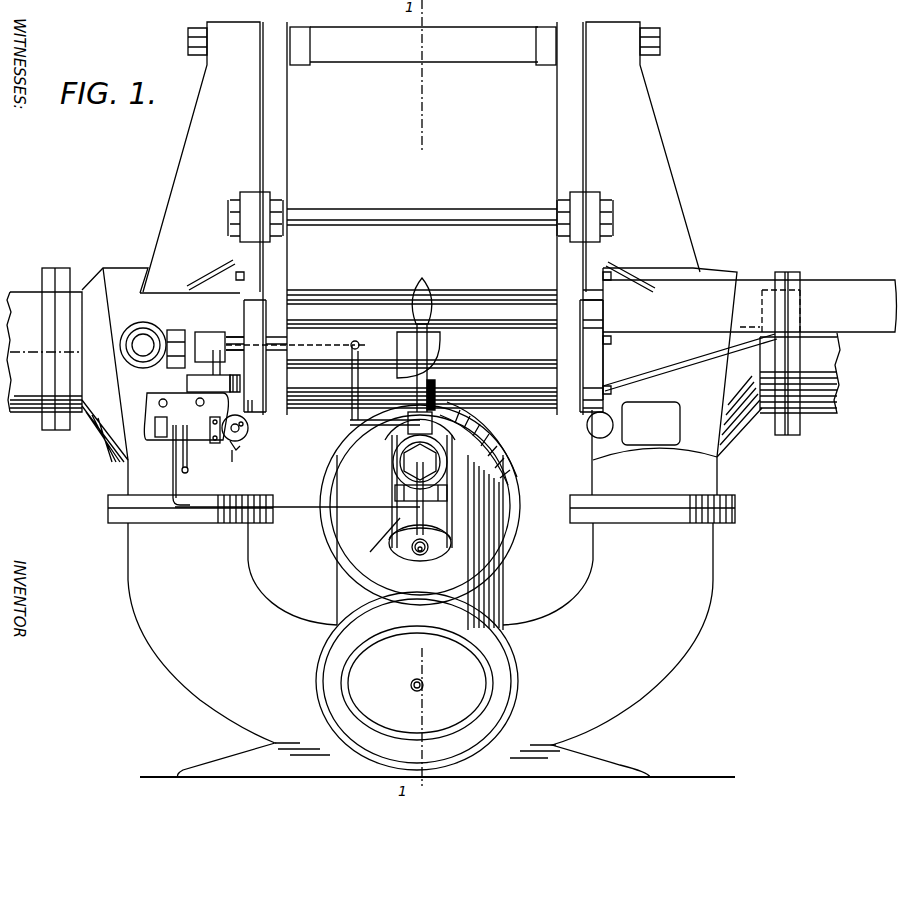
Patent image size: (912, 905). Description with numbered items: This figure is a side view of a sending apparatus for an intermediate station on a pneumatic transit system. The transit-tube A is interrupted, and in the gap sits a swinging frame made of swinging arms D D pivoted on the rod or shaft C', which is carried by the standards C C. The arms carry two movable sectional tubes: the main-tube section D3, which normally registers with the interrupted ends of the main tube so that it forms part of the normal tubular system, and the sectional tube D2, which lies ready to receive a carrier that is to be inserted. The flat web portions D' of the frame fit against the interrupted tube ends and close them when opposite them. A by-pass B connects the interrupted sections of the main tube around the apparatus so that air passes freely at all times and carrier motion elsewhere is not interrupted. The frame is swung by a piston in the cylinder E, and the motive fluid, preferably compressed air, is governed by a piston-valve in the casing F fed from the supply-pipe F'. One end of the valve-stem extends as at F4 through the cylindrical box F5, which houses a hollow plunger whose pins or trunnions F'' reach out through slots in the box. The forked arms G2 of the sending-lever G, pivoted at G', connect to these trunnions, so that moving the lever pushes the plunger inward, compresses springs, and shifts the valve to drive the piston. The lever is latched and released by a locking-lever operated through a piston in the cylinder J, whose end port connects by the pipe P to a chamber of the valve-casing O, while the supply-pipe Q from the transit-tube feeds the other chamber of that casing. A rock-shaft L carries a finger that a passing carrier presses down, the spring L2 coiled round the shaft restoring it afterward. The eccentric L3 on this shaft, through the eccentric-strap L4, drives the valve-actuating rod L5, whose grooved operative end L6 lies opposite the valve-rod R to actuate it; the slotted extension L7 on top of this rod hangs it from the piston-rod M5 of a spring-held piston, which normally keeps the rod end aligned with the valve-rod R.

The transit-tube A is at (452, 351).
The by-pass B is at (429, 522).
The standards C is at (421, 157).
The rod or shaft C' is at (423, 46).
The swinging arms D is at (421, 218).
The web portions of swinging frame D' is at (420, 302).
The sectional tube D2 is at (422, 235).
The main-tube section D3 is at (371, 349).
The cylinder E is at (417, 612).
The valve casing F is at (445, 420).
The supply-pipe F' is at (323, 379).
The pins or trunnions F'' is at (325, 431).
The valve-stem extension F4 is at (420, 554).
The cylindrical box F5 is at (378, 547).
The sending-lever G is at (426, 345).
The pivot of sending-lever G' is at (468, 462).
The forked arms G2 is at (457, 512).
The cylinder J is at (478, 443).
The rock-shaft L is at (262, 405).
The spring L2 is at (224, 438).
The eccentric L3 is at (250, 430).
The eccentric-strap L4 is at (245, 445).
The valve-actuating rod L5 is at (232, 452).
The operative end of valve-actuating rod L6 is at (187, 461).
The slotted extension L7 is at (203, 440).
The piston-rod M5 is at (194, 373).
The valve-casing O is at (156, 425).
The pipe P is at (175, 455).
The supply-pipe Q is at (173, 470).
The valve-rod R is at (160, 403).